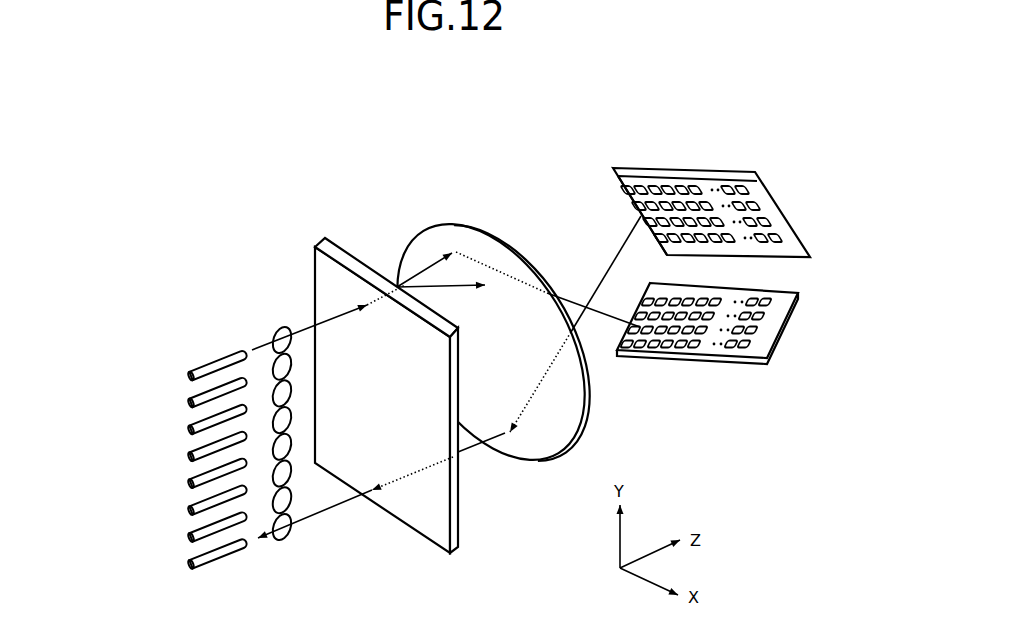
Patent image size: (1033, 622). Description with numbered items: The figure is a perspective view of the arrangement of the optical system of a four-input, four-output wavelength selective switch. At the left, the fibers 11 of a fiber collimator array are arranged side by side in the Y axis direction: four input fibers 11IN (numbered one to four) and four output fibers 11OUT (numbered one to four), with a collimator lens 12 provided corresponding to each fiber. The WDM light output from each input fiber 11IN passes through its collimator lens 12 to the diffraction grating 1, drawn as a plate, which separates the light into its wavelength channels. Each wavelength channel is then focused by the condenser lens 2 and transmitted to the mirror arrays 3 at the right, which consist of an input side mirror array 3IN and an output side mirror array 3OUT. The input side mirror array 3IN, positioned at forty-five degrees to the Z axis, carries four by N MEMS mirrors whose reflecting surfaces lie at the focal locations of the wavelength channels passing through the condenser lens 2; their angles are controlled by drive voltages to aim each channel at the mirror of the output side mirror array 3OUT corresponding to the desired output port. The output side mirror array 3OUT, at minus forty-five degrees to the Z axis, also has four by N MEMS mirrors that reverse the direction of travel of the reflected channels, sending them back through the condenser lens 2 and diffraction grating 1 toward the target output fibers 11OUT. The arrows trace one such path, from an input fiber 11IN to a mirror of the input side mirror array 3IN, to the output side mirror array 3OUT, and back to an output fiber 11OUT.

The diffraction grating 1 is at (322, 238).
The condenser lens 2 is at (465, 230).
The collimator lenses 12 is at (283, 327).
The fibers 11 is at (146, 460).
The input fibers 11IN is at (173, 460).
The output fibers 11OUT is at (173, 570).
The mirror arrays 3 is at (662, 267).
The input side mirror array 3IN is at (718, 307).
The output side mirror array 3OUT is at (661, 190).